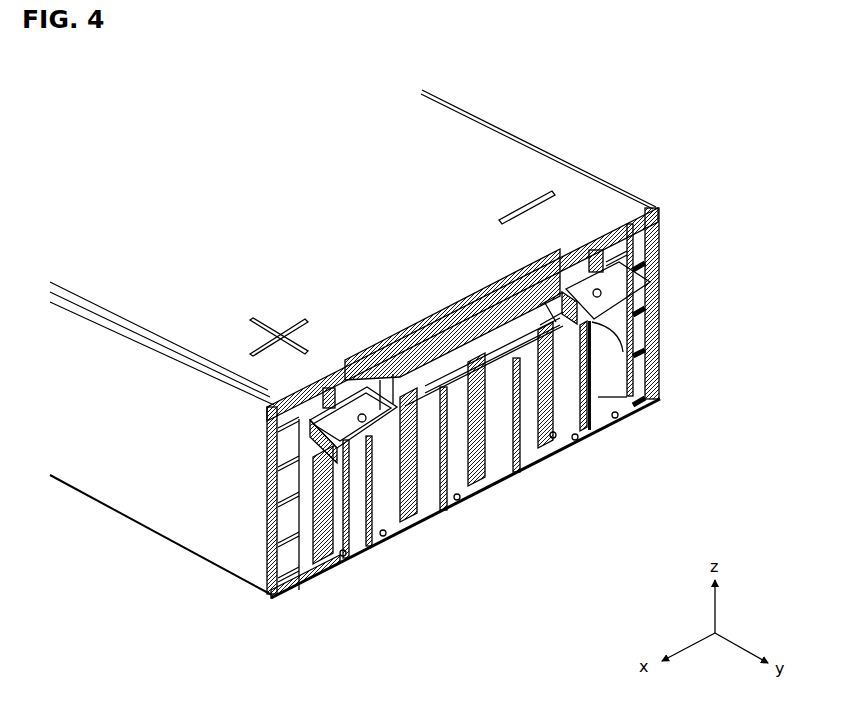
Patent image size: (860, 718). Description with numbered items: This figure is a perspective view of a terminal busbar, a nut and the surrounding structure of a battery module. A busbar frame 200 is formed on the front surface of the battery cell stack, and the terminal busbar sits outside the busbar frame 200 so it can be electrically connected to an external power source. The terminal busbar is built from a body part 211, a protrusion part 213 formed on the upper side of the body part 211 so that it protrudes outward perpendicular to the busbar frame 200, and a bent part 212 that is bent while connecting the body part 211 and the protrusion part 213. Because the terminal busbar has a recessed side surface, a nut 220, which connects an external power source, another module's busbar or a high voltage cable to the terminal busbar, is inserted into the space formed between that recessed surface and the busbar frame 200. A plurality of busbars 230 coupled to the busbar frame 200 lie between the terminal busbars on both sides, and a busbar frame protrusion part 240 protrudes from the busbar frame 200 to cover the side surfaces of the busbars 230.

The busbar frame 200 is at (617, 224).
The body part 211 is at (641, 407).
The bent part 212 is at (626, 309).
The protrusion part 213 is at (641, 260).
The nut 220 is at (660, 338).
The busbars 230 is at (463, 480).
The busbar frame protrusion part 240 is at (659, 377).